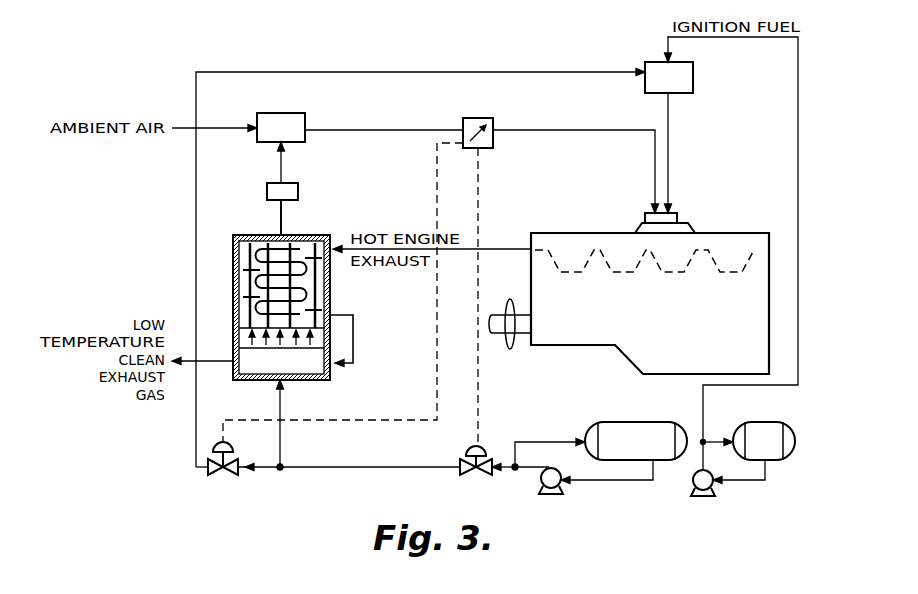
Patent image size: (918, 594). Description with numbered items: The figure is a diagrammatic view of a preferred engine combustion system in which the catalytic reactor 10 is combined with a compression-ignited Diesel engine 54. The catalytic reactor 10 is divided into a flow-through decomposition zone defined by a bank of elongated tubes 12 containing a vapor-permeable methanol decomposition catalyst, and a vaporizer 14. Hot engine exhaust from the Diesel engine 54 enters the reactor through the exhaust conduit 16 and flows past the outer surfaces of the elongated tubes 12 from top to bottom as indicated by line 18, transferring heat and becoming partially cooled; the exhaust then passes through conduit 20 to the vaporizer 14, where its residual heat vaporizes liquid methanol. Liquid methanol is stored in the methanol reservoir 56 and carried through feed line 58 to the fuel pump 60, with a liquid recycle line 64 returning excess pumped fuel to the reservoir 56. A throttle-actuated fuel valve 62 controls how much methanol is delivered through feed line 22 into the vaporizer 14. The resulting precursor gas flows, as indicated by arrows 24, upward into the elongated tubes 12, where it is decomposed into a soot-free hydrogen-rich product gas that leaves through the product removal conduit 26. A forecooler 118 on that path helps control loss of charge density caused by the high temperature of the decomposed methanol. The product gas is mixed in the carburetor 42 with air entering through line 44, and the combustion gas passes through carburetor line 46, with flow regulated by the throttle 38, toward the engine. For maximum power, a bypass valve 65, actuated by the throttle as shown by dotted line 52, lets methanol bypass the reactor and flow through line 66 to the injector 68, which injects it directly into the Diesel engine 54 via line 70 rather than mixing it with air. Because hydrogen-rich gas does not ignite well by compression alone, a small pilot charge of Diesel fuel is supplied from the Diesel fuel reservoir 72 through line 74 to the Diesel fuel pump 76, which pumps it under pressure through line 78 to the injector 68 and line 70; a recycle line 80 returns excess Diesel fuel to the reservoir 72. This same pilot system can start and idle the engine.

The catalytic reactor 10 is at (303, 293).
The elongated tubes 12 is at (251, 239).
The vaporizer 14 is at (310, 363).
The exhaust conduit 16 is at (503, 249).
The exhaust flow line 18 is at (307, 268).
The conduit 20 is at (353, 326).
The feed line 22 is at (336, 467).
The arrows 24 is at (328, 344).
The product removal conduit 26 is at (283, 222).
The throttle 38 is at (490, 118).
The carburetor 42 is at (283, 113).
The air line 44 is at (213, 128).
The carburetor line 46 is at (447, 130).
The dotted line 52 is at (437, 401).
The Diesel engine 54 is at (712, 233).
The liquid methanol reservoir 56 is at (652, 430).
The feed line 58 is at (630, 480).
The fuel pump 60 is at (560, 486).
The throttle-actuated fuel valve 62 is at (463, 452).
The liquid recycle line 64 is at (556, 442).
The bypass valve 65 is at (213, 475).
The line 66 is at (196, 232).
The injector 68 is at (693, 79).
The line 70 is at (670, 141).
The Diesel fuel reservoir 72 is at (763, 428).
The line 74 is at (760, 480).
The Diesel fuel pump 76 is at (710, 489).
The line 78 is at (798, 176).
The recycle line 80 is at (705, 440).
The forecooler 118 is at (298, 191).